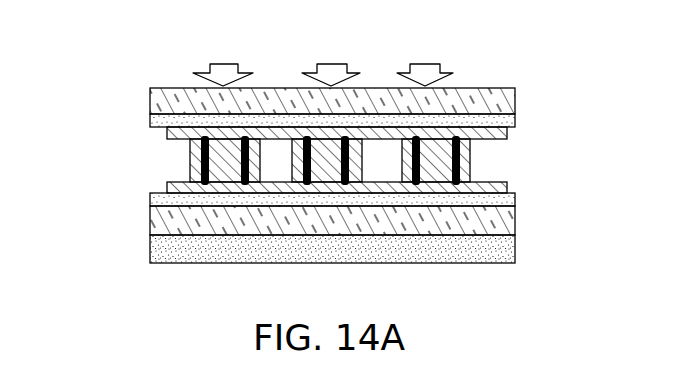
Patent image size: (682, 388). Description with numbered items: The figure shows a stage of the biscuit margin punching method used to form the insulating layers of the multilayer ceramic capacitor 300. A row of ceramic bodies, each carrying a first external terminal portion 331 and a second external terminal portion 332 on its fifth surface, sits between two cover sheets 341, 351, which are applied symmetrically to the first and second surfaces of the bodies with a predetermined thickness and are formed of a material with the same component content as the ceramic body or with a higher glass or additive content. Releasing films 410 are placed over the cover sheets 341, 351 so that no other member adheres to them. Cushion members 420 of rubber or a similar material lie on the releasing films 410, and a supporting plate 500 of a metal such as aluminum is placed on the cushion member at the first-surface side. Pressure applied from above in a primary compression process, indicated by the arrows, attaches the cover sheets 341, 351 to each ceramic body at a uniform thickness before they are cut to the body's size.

The cushion member 420 is at (515, 97).
The releasing film 410 is at (515, 120).
The cover sheet 351 is at (507, 135).
The cover sheet 341 is at (507, 188).
The multilayer ceramic capacitor 300 is at (385, 113).
The first external terminal portion 331 is at (407, 139).
The second external terminal portion 332 is at (456, 138).
The supporting plate 500 is at (515, 250).